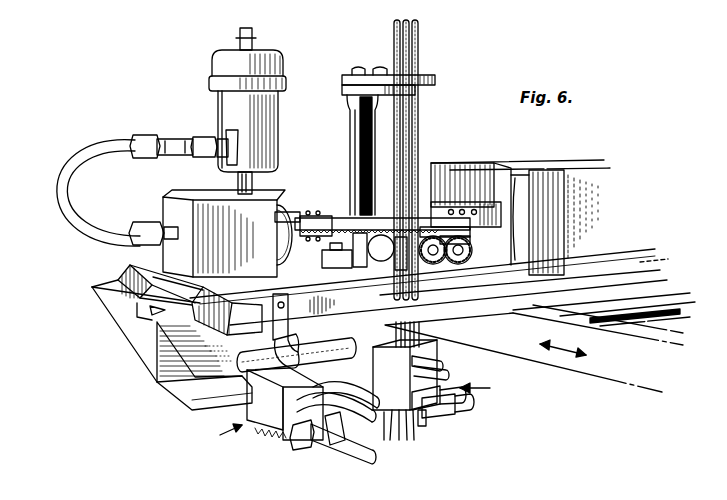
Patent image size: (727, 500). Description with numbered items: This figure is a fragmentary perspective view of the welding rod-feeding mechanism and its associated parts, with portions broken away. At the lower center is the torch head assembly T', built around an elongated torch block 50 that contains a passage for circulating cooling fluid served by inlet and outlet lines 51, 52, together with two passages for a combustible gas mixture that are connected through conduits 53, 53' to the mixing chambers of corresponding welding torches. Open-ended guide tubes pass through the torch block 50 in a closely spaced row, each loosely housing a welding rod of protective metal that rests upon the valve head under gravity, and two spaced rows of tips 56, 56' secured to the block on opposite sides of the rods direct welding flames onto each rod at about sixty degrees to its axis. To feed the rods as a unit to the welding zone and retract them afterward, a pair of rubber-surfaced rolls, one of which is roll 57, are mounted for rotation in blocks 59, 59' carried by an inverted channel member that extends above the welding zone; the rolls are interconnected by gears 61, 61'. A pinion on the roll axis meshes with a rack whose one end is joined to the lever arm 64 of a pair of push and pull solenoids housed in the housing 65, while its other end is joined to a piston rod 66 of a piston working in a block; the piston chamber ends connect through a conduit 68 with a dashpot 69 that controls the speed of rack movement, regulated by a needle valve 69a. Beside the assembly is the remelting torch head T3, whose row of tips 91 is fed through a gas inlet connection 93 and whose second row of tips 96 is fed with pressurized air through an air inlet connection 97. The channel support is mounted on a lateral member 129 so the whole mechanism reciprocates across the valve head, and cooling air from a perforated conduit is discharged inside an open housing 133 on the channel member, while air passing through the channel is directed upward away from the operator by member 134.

The dashpot 69 is at (225, 108).
The needle valve 69a is at (240, 146).
The conduit 68 is at (113, 190).
The piston rod 66 is at (298, 222).
The lever arm 64 is at (494, 205).
The housing 65 is at (566, 166).
The block 59 is at (339, 256).
The roll 57 is at (380, 262).
The block 59' is at (394, 271).
The gear 61 is at (433, 265).
The gear 61' is at (470, 264).
The open housing 133 is at (125, 330).
The member 134 is at (187, 313).
The lateral member 129 is at (612, 368).
The torch block 50 is at (380, 378).
The inlet line 51 is at (442, 364).
The outlet line 52 is at (448, 375).
The conduit 53 is at (450, 413).
The conduit 53' is at (476, 406).
The tips 56 is at (434, 434).
The tips 56' is at (392, 440).
The air inlet connection 97 is at (376, 452).
The tips 91 is at (283, 446).
The tips 96 is at (296, 457).
The gas inlet connection 93 is at (322, 455).
The torch head assembly T' is at (485, 391).
The torch head T3 is at (218, 435).